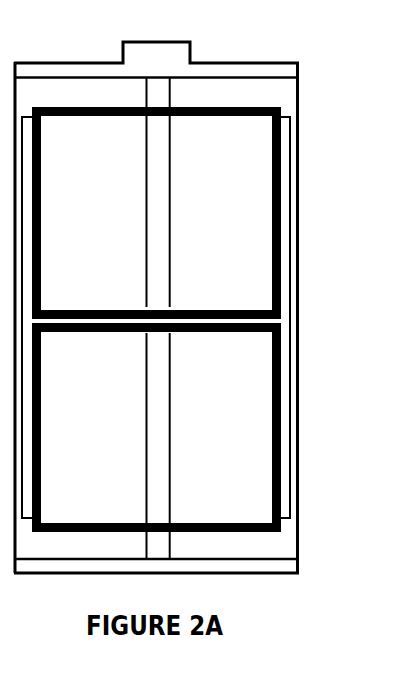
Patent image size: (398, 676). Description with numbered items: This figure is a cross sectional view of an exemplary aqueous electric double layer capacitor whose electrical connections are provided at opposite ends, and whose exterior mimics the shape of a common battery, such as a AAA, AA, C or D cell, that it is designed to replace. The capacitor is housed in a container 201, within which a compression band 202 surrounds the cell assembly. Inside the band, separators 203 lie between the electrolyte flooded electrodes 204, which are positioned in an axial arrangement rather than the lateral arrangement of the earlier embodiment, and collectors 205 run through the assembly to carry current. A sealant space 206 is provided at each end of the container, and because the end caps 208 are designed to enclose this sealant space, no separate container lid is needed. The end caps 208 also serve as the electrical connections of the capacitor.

The container 201 is at (298, 470).
The compression band 202 is at (290, 380).
The separators 203 is at (280, 254).
The electrodes 204 is at (207, 169).
The collectors 205 is at (172, 99).
The sealant space 206 is at (276, 99).
The end caps 208 is at (257, 62).